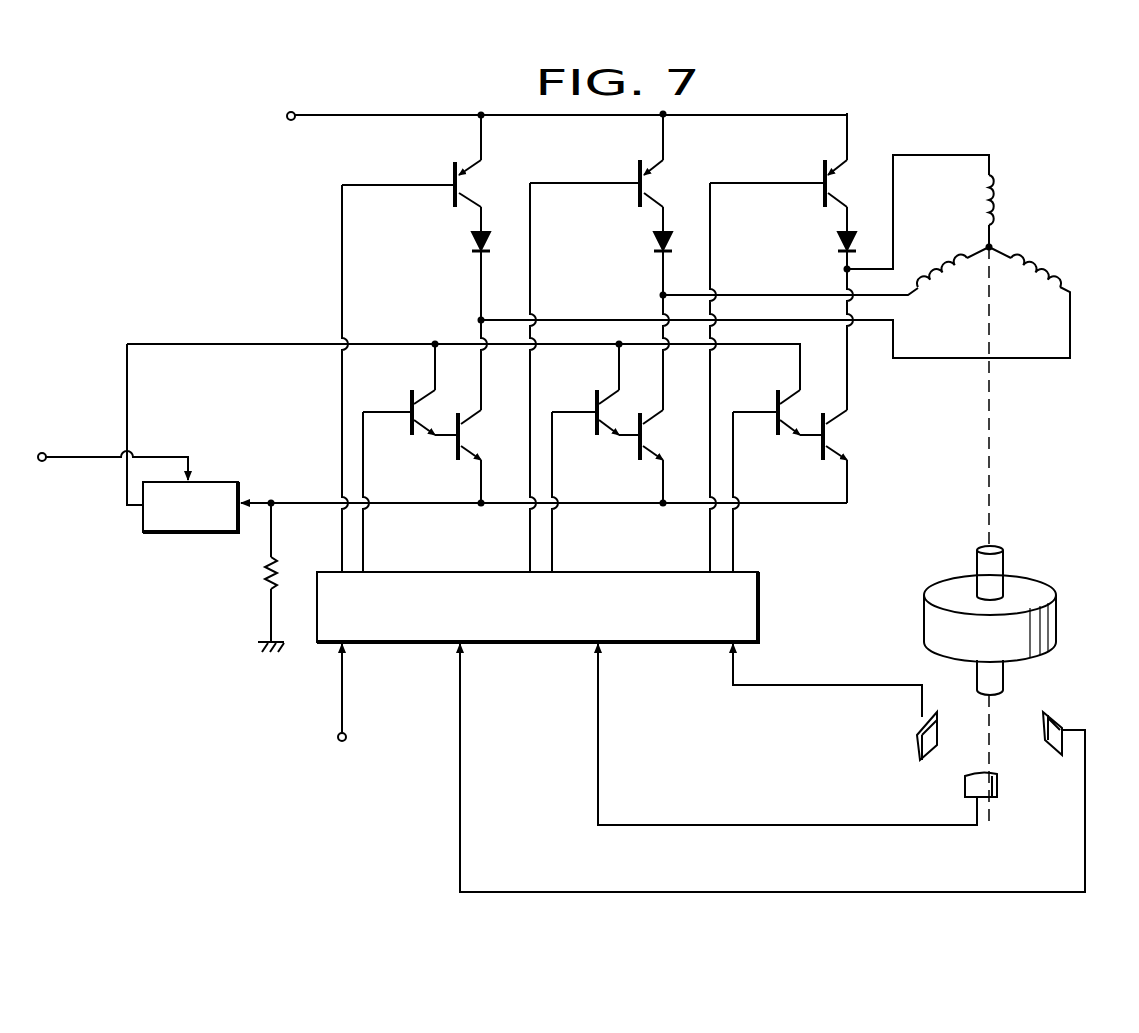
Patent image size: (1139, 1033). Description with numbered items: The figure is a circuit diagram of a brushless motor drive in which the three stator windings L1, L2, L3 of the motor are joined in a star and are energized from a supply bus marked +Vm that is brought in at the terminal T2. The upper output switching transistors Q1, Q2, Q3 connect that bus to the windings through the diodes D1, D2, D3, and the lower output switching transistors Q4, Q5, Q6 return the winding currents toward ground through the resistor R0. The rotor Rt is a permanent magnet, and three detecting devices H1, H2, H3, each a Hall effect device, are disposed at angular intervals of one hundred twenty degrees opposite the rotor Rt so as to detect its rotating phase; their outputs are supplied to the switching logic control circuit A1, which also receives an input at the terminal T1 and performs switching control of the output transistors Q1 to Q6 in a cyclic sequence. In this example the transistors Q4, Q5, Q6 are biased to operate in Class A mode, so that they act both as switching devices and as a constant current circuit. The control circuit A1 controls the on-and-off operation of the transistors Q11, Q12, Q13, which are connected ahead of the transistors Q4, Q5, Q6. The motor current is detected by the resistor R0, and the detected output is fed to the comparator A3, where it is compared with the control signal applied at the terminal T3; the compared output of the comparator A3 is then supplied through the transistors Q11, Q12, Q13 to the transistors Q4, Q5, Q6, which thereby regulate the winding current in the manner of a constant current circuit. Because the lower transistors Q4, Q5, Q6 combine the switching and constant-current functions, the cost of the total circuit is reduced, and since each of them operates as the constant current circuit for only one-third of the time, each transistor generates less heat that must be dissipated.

The motor supply voltage terminal Vm is at (532, 118).
The power supply terminal T2 is at (290, 121).
The input terminal T1 is at (341, 742).
The reference input terminal T3 is at (42, 462).
The output switching transistor Q1 is at (820, 195).
The output switching transistor Q2 is at (637, 195).
The output switching transistor Q3 is at (455, 195).
The output switching transistor Q4 is at (823, 442).
The output switching transistor Q5 is at (641, 442).
The output switching transistor Q6 is at (458, 442).
The transistor Q11 is at (773, 427).
The transistor Q12 is at (592, 427).
The transistor Q13 is at (408, 427).
The diode D1 is at (840, 251).
The diode D2 is at (658, 251).
The diode D3 is at (476, 251).
The stator winding L1 is at (976, 190).
The stator winding L2 is at (946, 288).
The stator winding L3 is at (1033, 288).
The switching logic control circuit A1 is at (523, 648).
The comparator A3 is at (168, 535).
The resistor R0 is at (262, 570).
The rotor Rt is at (1054, 620).
The detecting device H1 is at (915, 752).
The detecting device H2 is at (998, 790).
The detecting device H3 is at (1056, 722).